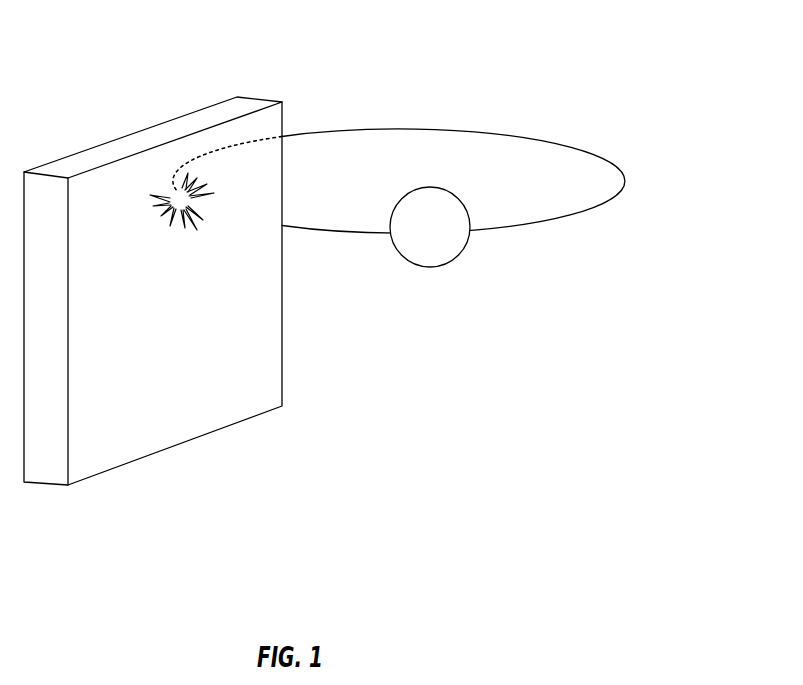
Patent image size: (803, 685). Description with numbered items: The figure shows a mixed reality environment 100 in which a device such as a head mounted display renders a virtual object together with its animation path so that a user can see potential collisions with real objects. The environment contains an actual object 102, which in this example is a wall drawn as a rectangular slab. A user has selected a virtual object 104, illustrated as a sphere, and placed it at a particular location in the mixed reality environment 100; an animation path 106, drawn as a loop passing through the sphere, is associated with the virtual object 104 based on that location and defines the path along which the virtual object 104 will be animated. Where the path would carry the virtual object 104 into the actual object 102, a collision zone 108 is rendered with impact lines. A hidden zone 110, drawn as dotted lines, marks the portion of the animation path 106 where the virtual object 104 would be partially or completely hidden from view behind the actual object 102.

The mixed reality environment 100 is at (553, 97).
The actual object 102 is at (222, 430).
The virtual object 104 is at (457, 260).
The animation path 106 is at (713, 162).
The collision zone 108 is at (176, 181).
The hidden zone 110 is at (208, 153).